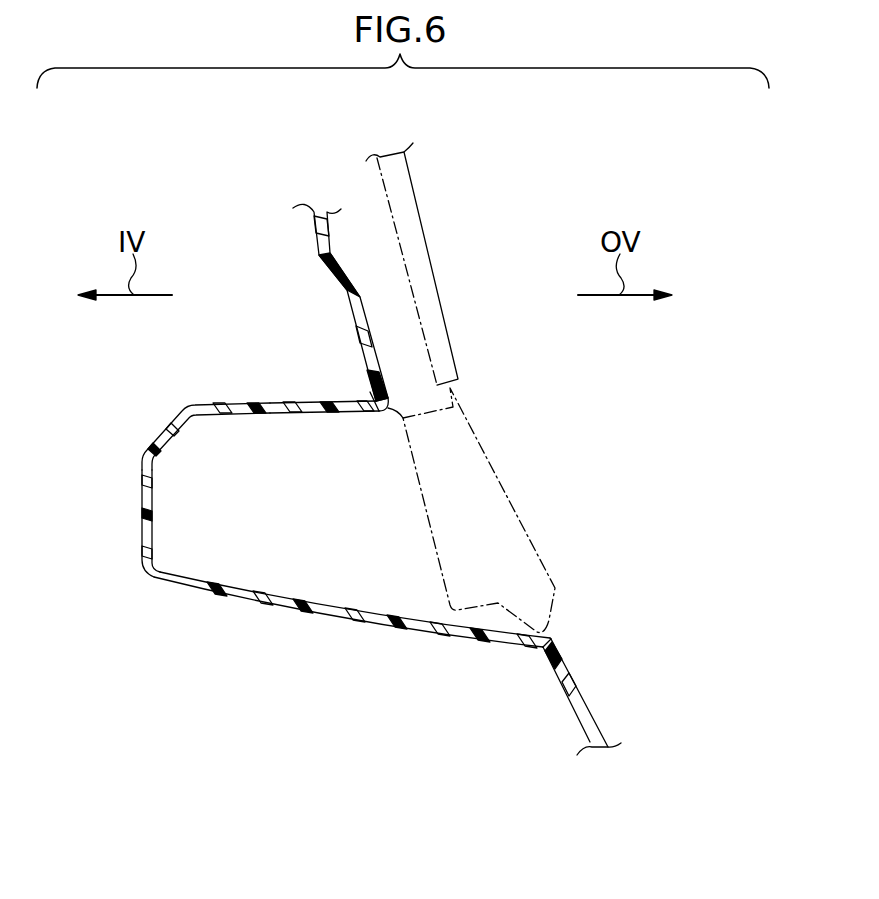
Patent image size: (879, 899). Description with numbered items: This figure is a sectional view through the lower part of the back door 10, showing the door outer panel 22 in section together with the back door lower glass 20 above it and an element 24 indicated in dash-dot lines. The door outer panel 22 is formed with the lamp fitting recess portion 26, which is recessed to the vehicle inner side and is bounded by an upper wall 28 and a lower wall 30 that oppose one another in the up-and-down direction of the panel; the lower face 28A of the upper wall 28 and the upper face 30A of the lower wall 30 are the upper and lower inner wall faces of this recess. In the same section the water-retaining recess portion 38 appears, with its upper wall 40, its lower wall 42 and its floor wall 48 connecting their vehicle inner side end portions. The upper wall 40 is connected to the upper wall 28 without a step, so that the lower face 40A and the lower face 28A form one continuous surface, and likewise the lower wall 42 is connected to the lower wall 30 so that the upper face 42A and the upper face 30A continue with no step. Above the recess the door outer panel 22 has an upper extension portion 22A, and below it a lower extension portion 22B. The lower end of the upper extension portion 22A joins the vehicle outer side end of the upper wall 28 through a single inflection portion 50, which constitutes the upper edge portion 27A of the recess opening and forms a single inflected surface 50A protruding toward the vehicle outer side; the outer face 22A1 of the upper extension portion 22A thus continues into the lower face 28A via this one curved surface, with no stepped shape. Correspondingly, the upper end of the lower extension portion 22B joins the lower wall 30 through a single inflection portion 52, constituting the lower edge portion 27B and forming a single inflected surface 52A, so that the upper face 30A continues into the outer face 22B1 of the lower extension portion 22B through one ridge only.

The back door 10 is at (645, 409).
The back door lower glass 20 is at (413, 212).
The door outer panel 22 is at (314, 241).
The upper extension portion 22A is at (338, 281).
The face at the vehicle outer side of the upper extension portion 22A1 is at (370, 343).
The lower extension portion 22B is at (580, 731).
The face at the vehicle outer side of the lower extension portion 22B1 is at (588, 703).
The seal member 24 is at (537, 508).
The lamp fitting recess portion 26 is at (400, 533).
The upper edge portion 27A is at (400, 394).
The lower edge portion 27B is at (566, 647).
The upper wall 28 is at (310, 400).
The lower face of the upper wall 28A is at (353, 414).
The lower wall 30 is at (432, 633).
The upper face of the lower wall 30A is at (475, 627).
The water-retaining recess portion 38 is at (182, 534).
The upper wall 40 is at (225, 402).
The lower face of the upper wall 40A is at (212, 416).
The lower wall 42 is at (230, 594).
The upper face of the lower wall 42A is at (297, 593).
The floor wall 48 is at (141, 512).
The inflection portion 50 is at (363, 392).
The inflected surface 50A is at (403, 418).
The inflection portion 52 is at (537, 653).
The inflected surface 52A is at (552, 640).